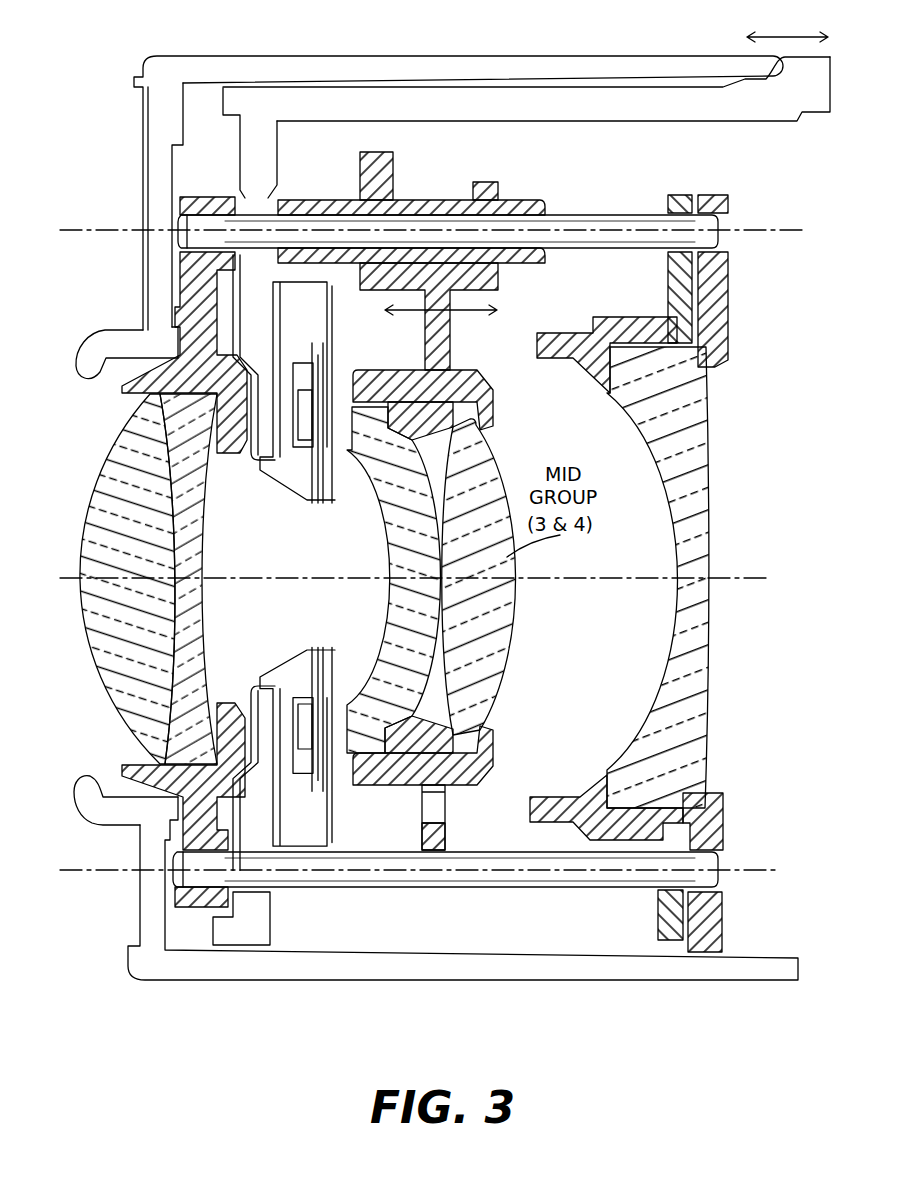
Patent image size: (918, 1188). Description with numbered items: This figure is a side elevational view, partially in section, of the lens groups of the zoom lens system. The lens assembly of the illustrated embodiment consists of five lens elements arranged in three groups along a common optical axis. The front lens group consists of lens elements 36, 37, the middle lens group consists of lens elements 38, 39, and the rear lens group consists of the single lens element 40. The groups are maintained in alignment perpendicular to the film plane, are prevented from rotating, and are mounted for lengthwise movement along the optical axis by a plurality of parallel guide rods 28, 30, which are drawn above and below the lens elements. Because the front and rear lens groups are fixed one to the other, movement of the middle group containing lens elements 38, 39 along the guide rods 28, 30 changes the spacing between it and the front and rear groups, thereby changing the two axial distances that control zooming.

The guide rod 28 is at (492, 878).
The guide rod 30 is at (623, 223).
The lens element 36 is at (90, 517).
The lens element 37 is at (197, 518).
The lens element 38 is at (402, 560).
The lens element 39 is at (493, 635).
The lens element 40 is at (702, 463).